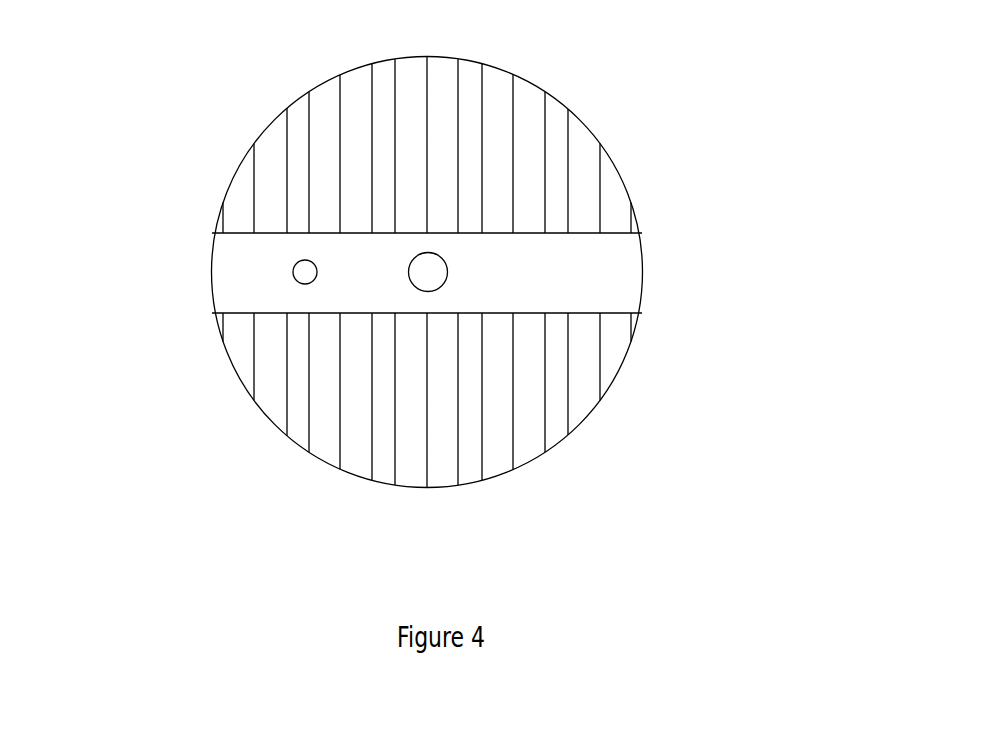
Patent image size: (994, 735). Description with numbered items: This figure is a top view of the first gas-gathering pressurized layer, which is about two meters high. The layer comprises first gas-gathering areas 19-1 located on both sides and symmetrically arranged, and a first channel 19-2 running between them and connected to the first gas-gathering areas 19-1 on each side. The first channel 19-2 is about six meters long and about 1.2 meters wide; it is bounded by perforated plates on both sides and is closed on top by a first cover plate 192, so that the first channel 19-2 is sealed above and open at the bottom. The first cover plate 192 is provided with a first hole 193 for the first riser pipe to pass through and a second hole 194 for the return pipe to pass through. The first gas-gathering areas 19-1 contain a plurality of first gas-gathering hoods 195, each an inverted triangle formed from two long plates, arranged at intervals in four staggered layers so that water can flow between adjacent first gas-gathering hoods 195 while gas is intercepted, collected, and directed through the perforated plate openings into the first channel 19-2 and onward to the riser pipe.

The first gas-gathering area 19-1 is at (535, 83).
The first channel 19-2 is at (645, 252).
The first cover plate 192 is at (578, 273).
The first hole 193 is at (306, 271).
The second hole 194 is at (420, 272).
The first gas-gathering hood 195 is at (427, 423).